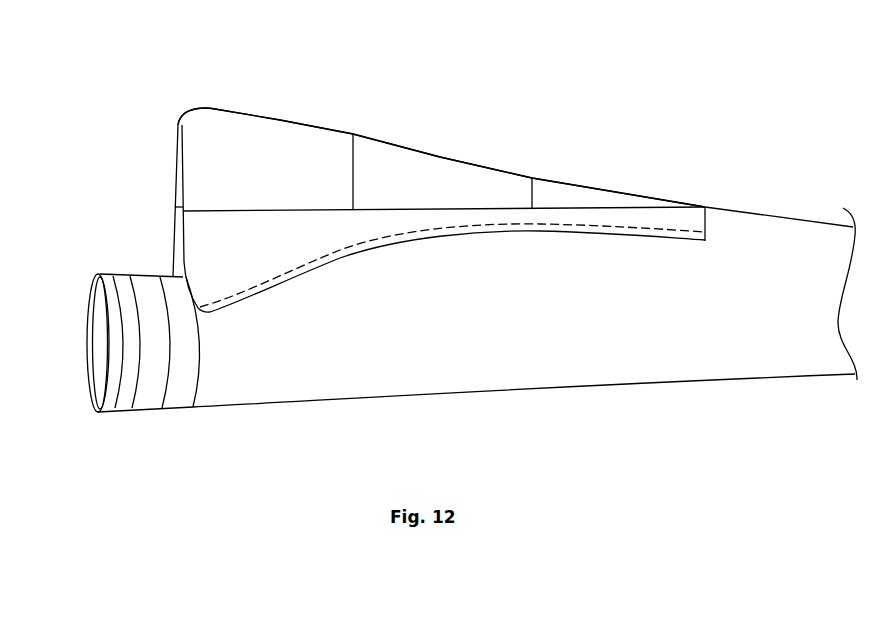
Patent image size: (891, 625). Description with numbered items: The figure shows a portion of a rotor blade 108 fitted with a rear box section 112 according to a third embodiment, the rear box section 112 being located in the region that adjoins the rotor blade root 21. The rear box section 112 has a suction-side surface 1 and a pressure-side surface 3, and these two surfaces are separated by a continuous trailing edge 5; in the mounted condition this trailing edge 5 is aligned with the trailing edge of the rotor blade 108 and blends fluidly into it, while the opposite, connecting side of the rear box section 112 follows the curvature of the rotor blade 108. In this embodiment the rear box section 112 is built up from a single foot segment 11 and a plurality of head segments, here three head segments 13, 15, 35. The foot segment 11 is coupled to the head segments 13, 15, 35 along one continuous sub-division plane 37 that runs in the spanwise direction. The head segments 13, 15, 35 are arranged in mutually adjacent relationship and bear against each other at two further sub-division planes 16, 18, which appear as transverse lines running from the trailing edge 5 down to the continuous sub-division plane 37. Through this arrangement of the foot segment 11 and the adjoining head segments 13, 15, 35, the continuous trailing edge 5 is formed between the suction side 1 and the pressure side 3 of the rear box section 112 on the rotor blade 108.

The suction-side surface 1 is at (447, 264).
The pressure-side surface 3 is at (215, 161).
The trailing edge 5 is at (306, 105).
The foot segment 11 is at (212, 256).
The head segment 13 is at (218, 122).
The head segment 15 is at (437, 175).
The sub-division plane 16 is at (347, 170).
The sub-division plane 18 is at (520, 190).
The rotor blade root 21 is at (110, 431).
The head segment 35 is at (573, 197).
The continuous sub-division plane 37 is at (672, 214).
The rotor blade 108 is at (648, 147).
The rear box section 112 is at (419, 104).